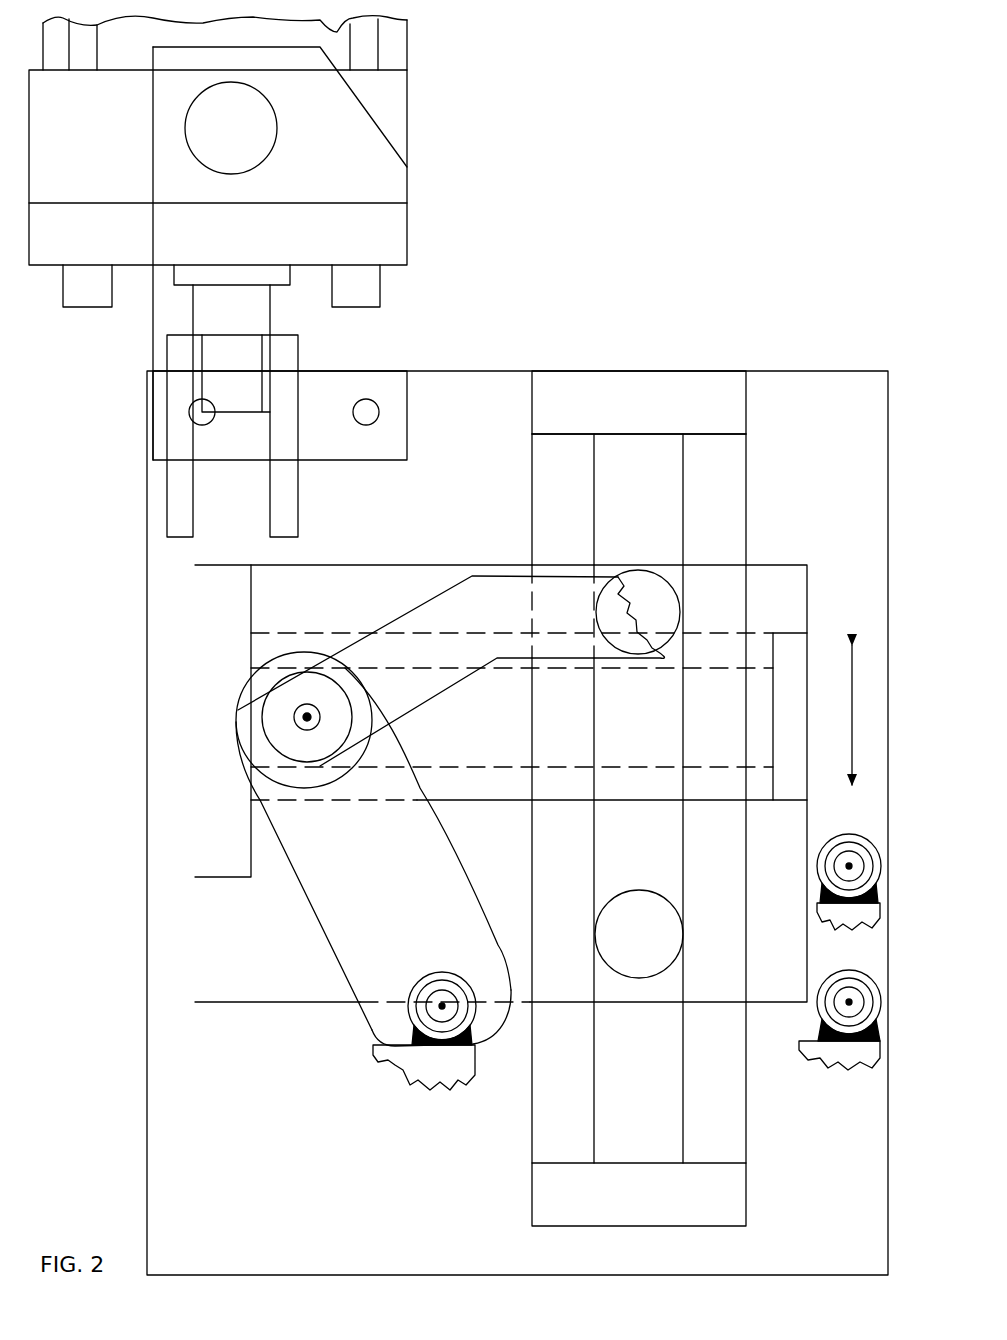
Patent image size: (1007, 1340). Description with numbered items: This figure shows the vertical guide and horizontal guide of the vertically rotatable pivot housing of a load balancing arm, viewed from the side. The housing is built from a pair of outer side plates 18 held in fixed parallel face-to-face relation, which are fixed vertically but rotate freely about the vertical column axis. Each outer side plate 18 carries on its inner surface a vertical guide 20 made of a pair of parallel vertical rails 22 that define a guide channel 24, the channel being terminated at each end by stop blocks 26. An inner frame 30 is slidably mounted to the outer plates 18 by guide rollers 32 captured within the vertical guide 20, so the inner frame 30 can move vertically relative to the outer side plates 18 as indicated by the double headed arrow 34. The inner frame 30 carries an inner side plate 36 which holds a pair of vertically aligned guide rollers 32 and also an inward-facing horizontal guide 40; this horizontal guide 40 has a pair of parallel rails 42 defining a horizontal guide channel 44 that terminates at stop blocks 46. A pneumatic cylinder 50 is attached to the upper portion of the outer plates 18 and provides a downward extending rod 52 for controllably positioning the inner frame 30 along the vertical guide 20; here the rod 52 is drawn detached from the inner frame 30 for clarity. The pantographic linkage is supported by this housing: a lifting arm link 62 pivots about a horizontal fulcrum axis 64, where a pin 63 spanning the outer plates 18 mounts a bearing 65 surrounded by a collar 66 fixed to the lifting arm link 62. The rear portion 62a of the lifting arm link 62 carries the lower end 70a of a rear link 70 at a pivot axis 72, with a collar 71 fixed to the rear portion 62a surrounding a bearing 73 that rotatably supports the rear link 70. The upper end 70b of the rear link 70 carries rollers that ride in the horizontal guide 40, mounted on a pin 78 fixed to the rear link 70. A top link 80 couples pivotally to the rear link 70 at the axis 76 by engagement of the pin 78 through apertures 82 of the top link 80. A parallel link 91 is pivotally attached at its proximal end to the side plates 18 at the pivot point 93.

The outer side plate 18 is at (175, 1168).
The vertical guide 20 is at (757, 472).
The vertical rail 22 is at (545, 539).
The guide channel 24 is at (594, 472).
The stop block 26 is at (605, 385).
The inner frame 30 is at (413, 562).
The guide roller 32 is at (618, 578).
The double headed arrow 34 is at (855, 728).
The inner side plate 36 is at (301, 572).
The horizontal guide 40 is at (523, 812).
The rail 42 is at (462, 642).
The horizontal guide channel 44 is at (462, 752).
The stop block 46 is at (238, 618).
The pneumatic cylinder 50 is at (332, 55).
The rod 52 is at (258, 325).
The lifting arm link 62 is at (856, 1059).
The rear portion of lifting arm link 62a is at (442, 1077).
The pin 63 is at (856, 996).
The fulcrum axis 64 is at (849, 1002).
The bearing 65 is at (845, 982).
The collar 66 is at (835, 988).
The rear link 70 is at (314, 923).
The lower end of rear link 70a is at (373, 1032).
The upper end of rear link 70b is at (408, 750).
The collar 71 is at (414, 996).
The pivot axis 72 is at (442, 998).
The bearing 73 is at (459, 997).
The axis 76 is at (320, 712).
The pin 78 is at (309, 730).
The top link 80 is at (438, 605).
The aperture 82 is at (306, 717).
The parallel link 91 is at (847, 918).
The pivot point 93 is at (849, 866).